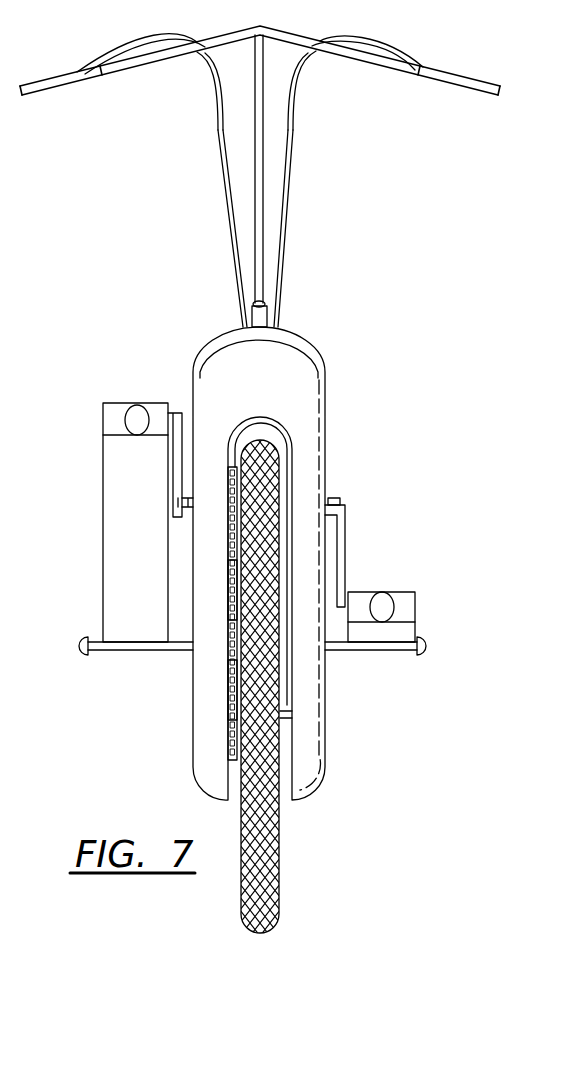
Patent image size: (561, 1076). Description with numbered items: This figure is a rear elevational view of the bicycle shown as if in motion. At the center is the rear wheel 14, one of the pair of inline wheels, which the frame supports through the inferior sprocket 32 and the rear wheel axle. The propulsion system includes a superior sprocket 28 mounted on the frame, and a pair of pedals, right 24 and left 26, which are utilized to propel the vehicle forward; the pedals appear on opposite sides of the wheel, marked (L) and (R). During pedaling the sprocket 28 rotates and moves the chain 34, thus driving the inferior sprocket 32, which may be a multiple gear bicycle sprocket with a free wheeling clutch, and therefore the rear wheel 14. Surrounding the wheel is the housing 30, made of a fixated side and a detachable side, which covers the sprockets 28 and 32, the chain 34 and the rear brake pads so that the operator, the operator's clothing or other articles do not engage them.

The rear wheel 14 is at (280, 838).
The right pedal 24 is at (405, 592).
The left pedal 26 is at (126, 403).
The sprocket 28 is at (228, 497).
The housing 30 is at (313, 348).
The inferior sprocket 32 is at (233, 688).
The chain 34 is at (233, 590).